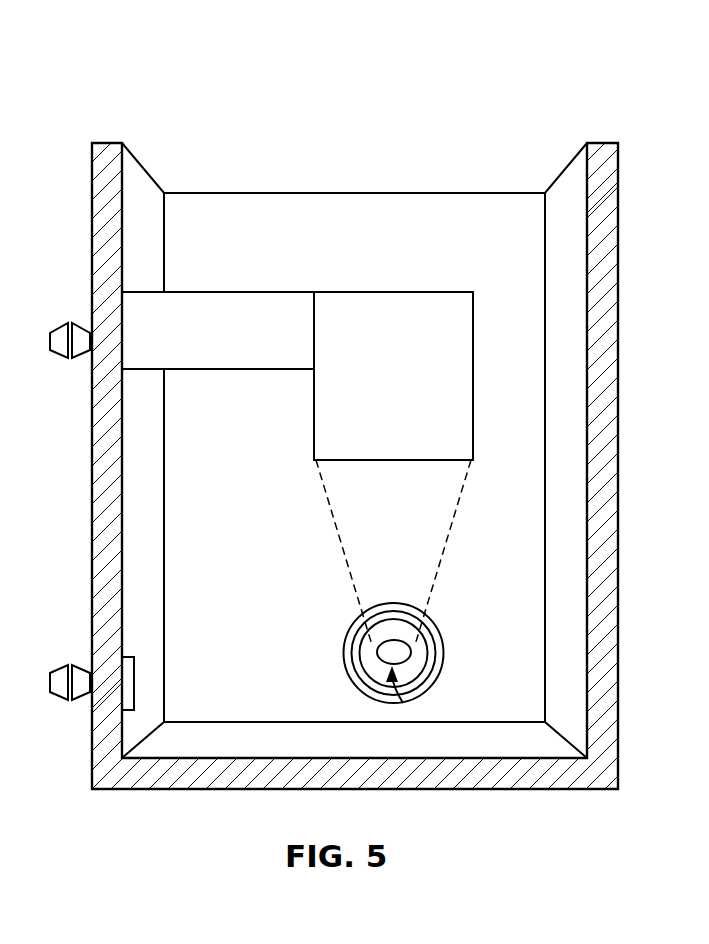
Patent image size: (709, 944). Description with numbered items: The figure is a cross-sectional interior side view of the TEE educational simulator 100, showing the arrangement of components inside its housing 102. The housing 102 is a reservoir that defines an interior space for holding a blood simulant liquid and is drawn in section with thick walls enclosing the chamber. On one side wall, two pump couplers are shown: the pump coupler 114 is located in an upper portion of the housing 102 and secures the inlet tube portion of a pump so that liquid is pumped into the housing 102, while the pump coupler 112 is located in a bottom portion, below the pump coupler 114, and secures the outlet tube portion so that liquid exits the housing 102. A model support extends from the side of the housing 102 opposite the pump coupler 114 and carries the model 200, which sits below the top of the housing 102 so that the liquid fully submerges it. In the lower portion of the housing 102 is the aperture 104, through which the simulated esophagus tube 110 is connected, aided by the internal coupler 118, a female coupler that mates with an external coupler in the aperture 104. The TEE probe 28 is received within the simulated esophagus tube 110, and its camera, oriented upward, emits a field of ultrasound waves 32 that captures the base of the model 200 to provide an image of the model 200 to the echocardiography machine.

The TEE educational simulator 100 is at (133, 70).
The housing 102 is at (603, 230).
The model 200 is at (385, 291).
The pump coupler 114 is at (60, 352).
The pump coupler 112 is at (60, 694).
The field of ultrasound waves 32 is at (322, 492).
The internal coupler 118 is at (345, 642).
The simulated esophagus tube 110 is at (433, 642).
The TEE probe 28 is at (393, 653).
The aperture 104 is at (405, 701).